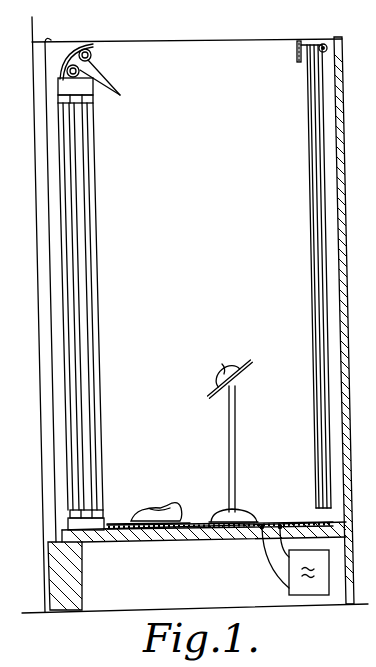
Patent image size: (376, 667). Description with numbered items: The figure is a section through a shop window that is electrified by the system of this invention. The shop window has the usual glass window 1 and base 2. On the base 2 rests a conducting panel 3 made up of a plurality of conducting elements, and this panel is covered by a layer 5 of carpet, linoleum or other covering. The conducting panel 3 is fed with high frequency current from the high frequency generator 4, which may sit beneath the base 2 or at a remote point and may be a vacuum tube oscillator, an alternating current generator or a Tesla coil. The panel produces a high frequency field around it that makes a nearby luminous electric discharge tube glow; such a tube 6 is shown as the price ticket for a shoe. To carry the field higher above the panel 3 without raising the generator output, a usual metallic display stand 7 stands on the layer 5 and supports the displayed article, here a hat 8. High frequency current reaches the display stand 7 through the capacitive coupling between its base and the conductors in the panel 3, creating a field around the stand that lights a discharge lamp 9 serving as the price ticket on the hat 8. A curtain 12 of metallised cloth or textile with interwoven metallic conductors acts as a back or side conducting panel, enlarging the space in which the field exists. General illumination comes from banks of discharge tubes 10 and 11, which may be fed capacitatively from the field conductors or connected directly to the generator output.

The glass window 1 is at (58, 216).
The base 2 is at (184, 542).
The conducting panel 3 is at (206, 530).
The high frequency generator 4 is at (289, 590).
The layer 5 is at (191, 524).
The luminous electric discharge tube 6 is at (168, 510).
The metallic display stand 7 is at (236, 445).
The hat 8 is at (241, 368).
The discharge lamp 9 is at (223, 365).
The bank of luminous electric discharge tubes 10 is at (105, 75).
The bank of luminous electric discharge tubes 11 is at (72, 315).
The curtain 12 is at (312, 302).